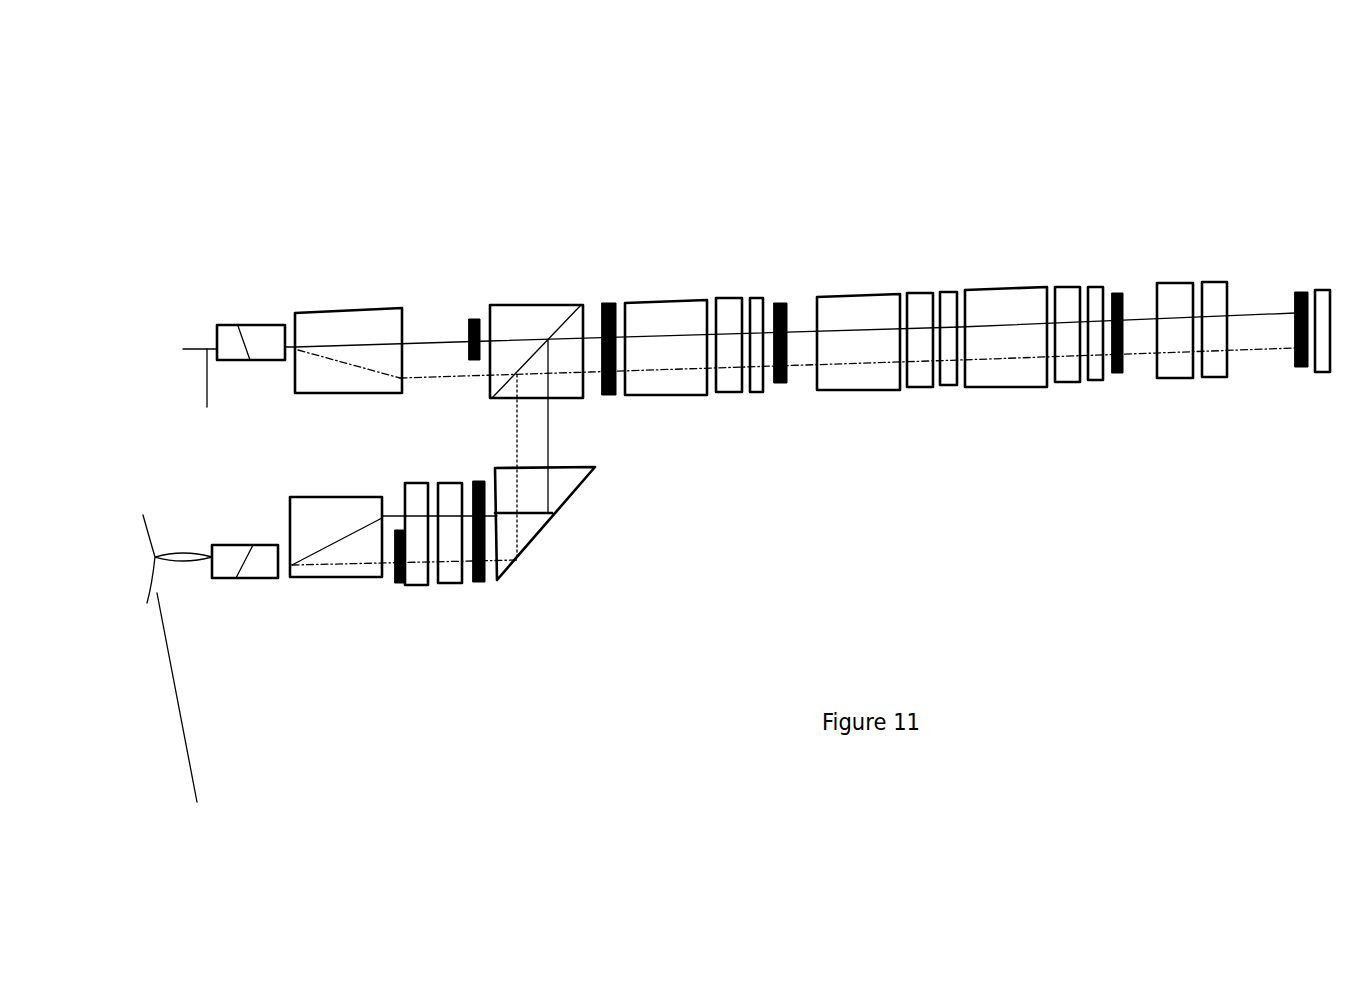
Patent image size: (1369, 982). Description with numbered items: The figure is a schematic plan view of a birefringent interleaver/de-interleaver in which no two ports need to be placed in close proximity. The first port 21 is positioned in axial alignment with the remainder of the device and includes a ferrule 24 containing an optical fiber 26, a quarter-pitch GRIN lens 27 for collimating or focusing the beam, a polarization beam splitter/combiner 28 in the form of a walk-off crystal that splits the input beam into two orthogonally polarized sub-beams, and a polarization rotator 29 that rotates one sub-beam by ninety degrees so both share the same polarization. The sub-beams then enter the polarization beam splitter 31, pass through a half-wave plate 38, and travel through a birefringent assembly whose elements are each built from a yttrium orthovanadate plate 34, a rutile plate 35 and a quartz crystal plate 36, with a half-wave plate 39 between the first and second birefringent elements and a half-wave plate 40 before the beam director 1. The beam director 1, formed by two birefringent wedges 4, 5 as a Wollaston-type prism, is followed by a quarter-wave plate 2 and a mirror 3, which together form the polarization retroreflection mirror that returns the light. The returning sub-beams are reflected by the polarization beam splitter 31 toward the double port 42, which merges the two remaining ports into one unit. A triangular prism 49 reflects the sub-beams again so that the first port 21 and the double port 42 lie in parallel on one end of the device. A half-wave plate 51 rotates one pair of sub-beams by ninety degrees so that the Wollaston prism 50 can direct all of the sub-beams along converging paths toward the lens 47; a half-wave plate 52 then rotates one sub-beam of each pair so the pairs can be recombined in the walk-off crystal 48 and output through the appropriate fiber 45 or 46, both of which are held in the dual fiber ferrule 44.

The beam director 1 is at (1202, 233).
The quarter-wave plate 2 is at (1295, 290).
The mirror 3 is at (1330, 373).
The birefringent wedge 4 is at (1170, 380).
The birefringent wedge 5 is at (1216, 378).
The first port 21 is at (270, 218).
The ferrule 24 is at (227, 325).
The optical fiber 26 is at (224, 385).
The lens 27 is at (262, 325).
The polarization beam splitter/combiner 28 is at (398, 308).
The polarization rotator 29 is at (468, 320).
The polarization beam splitter 31 is at (522, 305).
The yttrium orthovanadate plate 34 is at (660, 395).
The rutile plate 35 is at (727, 298).
The quartz crystal plate 36 is at (764, 393).
The half-wave plate 38 is at (613, 300).
The half-wave plate 39 is at (787, 300).
The half-wave plate 40 is at (1122, 376).
The double port 42 is at (248, 712).
The dual fiber ferrule 44 is at (234, 545).
The fiber 45 is at (157, 537).
The fiber 46 is at (188, 711).
The lens 47 is at (247, 580).
The walk-off crystal 48 is at (328, 577).
The triangular prism 49 is at (575, 492).
The Wollaston prism 50 is at (442, 607).
The half-wave plate 51 is at (485, 582).
The half-wave plate 52 is at (397, 583).